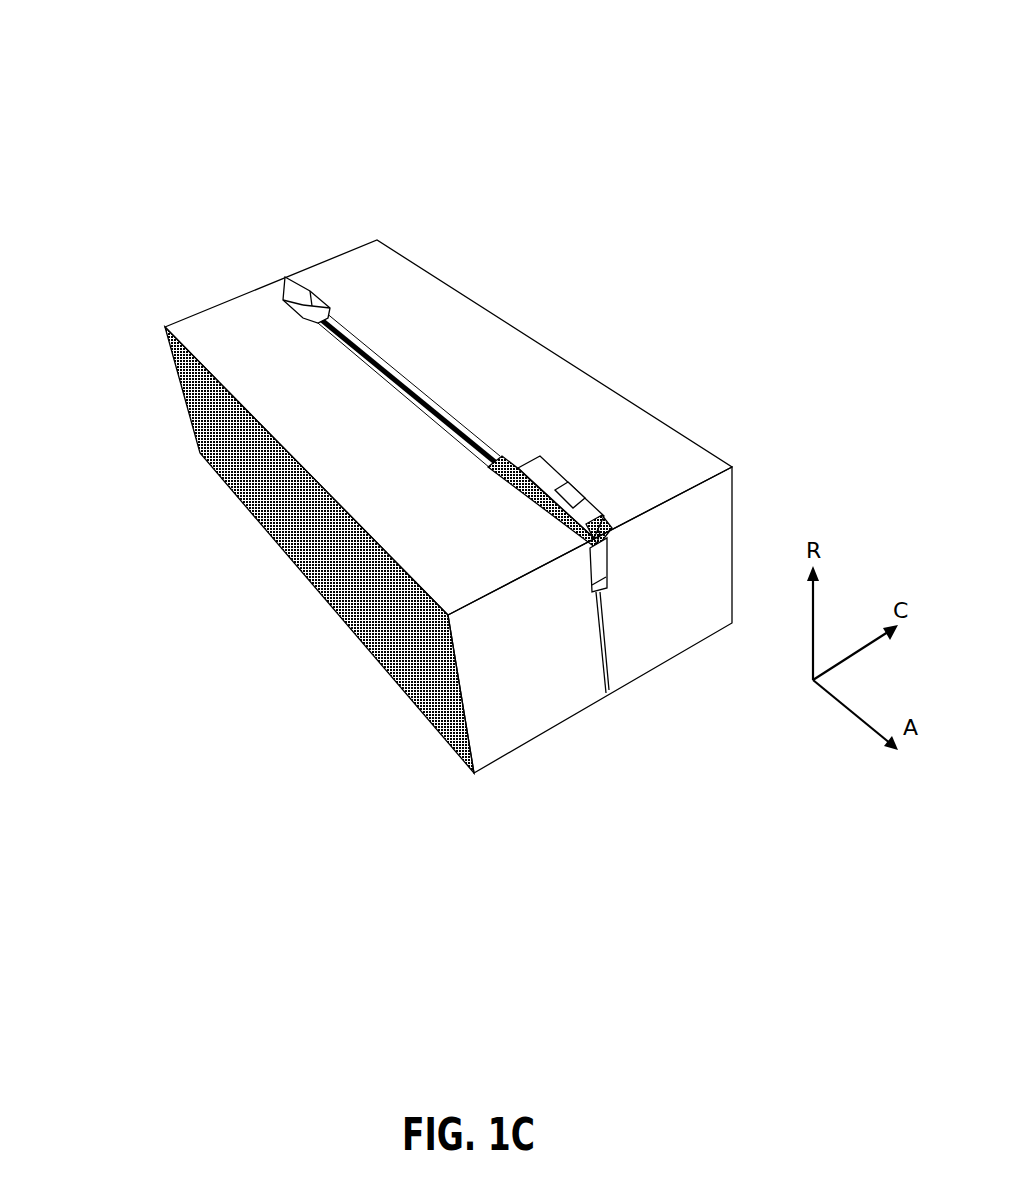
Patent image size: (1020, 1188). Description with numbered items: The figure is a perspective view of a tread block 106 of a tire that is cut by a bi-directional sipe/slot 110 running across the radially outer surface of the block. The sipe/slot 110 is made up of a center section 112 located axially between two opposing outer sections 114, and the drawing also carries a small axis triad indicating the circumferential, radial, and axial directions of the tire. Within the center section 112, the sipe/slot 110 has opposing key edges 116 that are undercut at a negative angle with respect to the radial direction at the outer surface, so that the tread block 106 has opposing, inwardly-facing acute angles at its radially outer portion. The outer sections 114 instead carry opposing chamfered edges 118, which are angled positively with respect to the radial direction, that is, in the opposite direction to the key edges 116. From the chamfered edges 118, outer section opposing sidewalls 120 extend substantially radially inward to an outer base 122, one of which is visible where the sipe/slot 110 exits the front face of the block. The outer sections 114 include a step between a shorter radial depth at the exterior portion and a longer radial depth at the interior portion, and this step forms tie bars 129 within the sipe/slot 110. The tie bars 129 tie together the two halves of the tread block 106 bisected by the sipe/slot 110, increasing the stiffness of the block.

The tread block 106 is at (120, 114).
The sipe/slot 110 is at (380, 365).
The center section 112 is at (413, 395).
The outer sections 114 is at (285, 291).
The key edges 116 is at (454, 425).
The chamfered edges 118 is at (587, 513).
The outer section opposing sidewalls 120 is at (597, 540).
The outer base 122 is at (604, 595).
The tie bars 129 is at (604, 628).